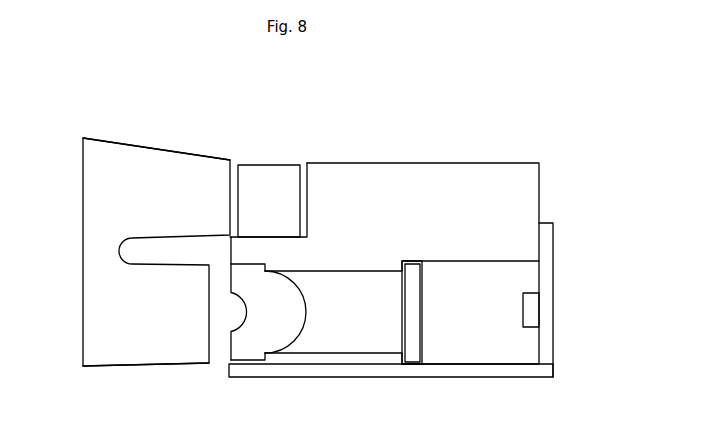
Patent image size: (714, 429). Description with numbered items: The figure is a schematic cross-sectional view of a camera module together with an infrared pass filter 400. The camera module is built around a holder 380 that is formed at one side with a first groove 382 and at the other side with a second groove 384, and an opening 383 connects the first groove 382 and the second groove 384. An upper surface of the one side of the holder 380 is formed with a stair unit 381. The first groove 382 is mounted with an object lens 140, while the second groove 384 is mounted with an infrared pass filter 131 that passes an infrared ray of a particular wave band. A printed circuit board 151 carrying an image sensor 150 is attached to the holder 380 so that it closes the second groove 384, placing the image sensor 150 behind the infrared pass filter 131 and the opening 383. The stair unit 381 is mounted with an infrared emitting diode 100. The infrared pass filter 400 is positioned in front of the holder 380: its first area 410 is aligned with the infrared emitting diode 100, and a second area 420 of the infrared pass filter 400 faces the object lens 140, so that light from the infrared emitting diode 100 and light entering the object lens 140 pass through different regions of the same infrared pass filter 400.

The infrared pass filter 400 is at (106, 120).
The first area 410 is at (187, 170).
The lower portion 420 is at (183, 348).
The infrared emitting diode 100 is at (273, 190).
The stair unit 381 is at (308, 197).
The holder 380 is at (432, 190).
The printed circuit board 151 is at (555, 238).
The image sensor 150 is at (533, 308).
The infrared pass filter 131 is at (415, 310).
The second groove 384 is at (522, 362).
The opening 383 is at (370, 340).
The first groove 382 is at (263, 360).
The object lens 140 is at (248, 345).